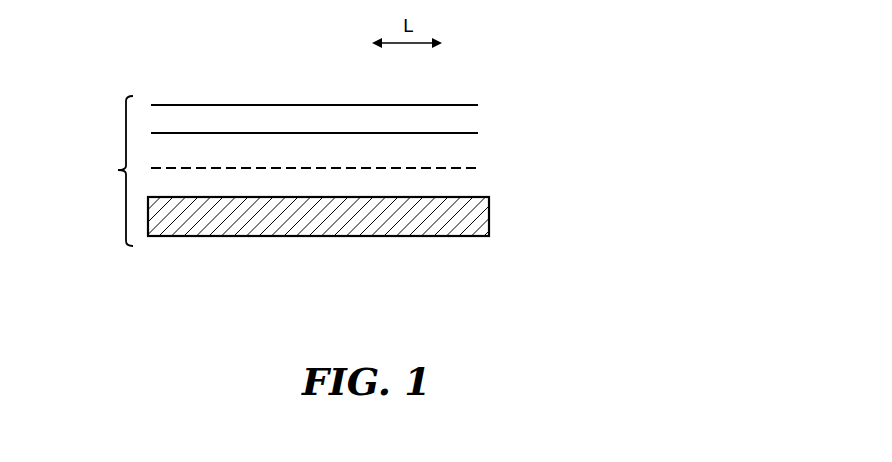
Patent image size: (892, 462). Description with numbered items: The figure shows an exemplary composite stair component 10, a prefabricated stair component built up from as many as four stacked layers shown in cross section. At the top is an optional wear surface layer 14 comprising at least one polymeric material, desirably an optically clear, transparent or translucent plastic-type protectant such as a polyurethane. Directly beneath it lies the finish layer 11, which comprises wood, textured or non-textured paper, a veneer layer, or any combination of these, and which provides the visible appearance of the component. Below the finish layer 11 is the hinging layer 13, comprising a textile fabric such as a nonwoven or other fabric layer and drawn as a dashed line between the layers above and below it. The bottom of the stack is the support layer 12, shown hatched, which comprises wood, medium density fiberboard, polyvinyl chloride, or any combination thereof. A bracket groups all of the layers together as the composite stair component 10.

The composite stair component 10 is at (99, 171).
The finish layer 11 is at (468, 133).
The support layer 12 is at (488, 238).
The hinging layer 13 is at (290, 168).
The wear surface layer 14 is at (276, 105).